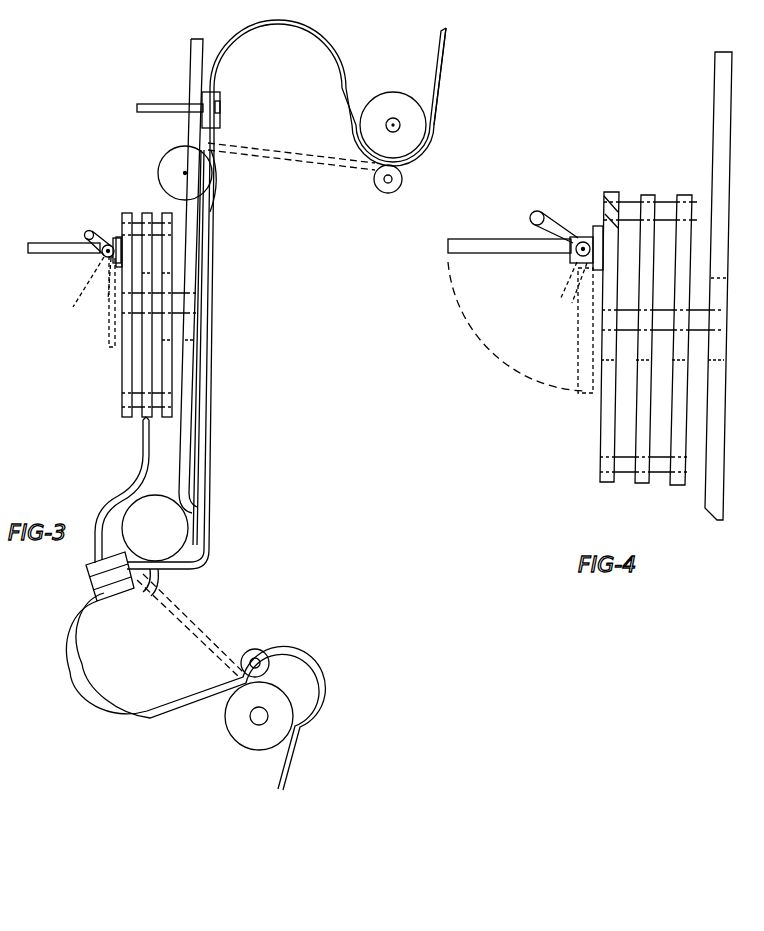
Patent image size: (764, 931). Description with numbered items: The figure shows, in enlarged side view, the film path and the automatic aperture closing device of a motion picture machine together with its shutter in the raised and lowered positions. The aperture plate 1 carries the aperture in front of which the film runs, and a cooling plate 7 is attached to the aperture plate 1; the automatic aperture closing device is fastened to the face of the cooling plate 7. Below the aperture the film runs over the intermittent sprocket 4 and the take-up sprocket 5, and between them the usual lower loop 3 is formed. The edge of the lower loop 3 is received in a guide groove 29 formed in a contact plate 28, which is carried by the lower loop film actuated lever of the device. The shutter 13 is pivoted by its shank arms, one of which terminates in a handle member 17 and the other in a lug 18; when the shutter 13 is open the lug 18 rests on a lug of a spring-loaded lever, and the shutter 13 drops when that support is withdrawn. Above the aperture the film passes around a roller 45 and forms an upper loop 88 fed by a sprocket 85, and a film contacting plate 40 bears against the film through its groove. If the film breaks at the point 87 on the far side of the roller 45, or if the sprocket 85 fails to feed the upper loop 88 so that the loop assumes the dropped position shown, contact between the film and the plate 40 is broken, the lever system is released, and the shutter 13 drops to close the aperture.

In FIG. 3, the aperture plate 1 is at (190, 58).
In FIG. 4, the aperture plate 1 is at (719, 76).
In FIG. 3, the lower loop 3 is at (88, 680).
In FIG. 3, the intermittent sprocket 4 is at (155, 528).
In FIG. 3, the take-up sprocket 5 is at (259, 699).
In FIG. 3, the cooling plate 7 is at (125, 373).
In FIG. 4, the cooling plate 7 is at (606, 427).
In FIG. 3, the shutter 13 is at (37, 253).
In FIG. 4, the shutter 13 is at (507, 249).
In FIG. 3, the handle member 17 is at (93, 231).
In FIG. 4, the handle member 17 is at (530, 219).
In FIG. 4, the lug 18 is at (564, 254).
In FIG. 3, the contact plate 28 is at (90, 566).
In FIG. 3, the guide groove 29 is at (92, 578).
In FIG. 3, the film contacting plate 40 is at (222, 100).
In FIG. 3, the roller 45 is at (168, 171).
In FIG. 3, the sprocket 85 is at (393, 142).
In FIG. 3, the breaking point 87 is at (446, 104).
In FIG. 3, the upper loop 88 is at (277, 24).